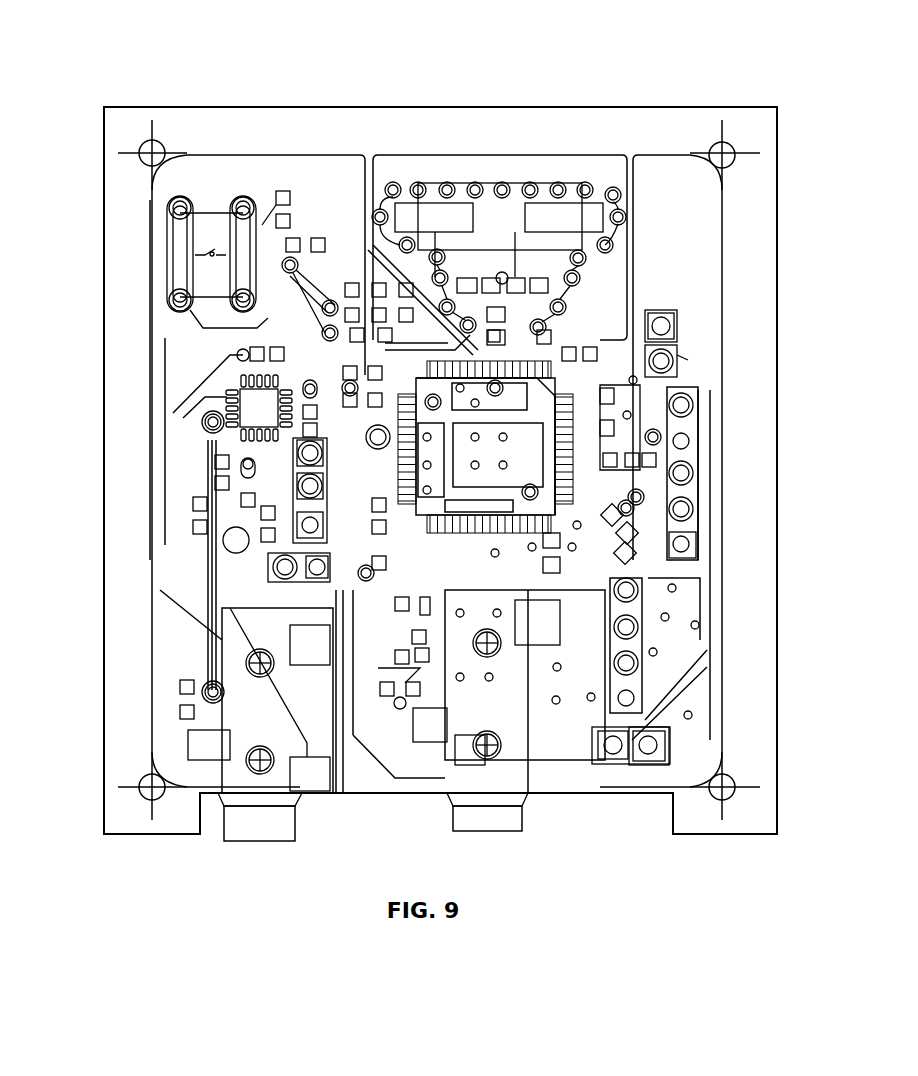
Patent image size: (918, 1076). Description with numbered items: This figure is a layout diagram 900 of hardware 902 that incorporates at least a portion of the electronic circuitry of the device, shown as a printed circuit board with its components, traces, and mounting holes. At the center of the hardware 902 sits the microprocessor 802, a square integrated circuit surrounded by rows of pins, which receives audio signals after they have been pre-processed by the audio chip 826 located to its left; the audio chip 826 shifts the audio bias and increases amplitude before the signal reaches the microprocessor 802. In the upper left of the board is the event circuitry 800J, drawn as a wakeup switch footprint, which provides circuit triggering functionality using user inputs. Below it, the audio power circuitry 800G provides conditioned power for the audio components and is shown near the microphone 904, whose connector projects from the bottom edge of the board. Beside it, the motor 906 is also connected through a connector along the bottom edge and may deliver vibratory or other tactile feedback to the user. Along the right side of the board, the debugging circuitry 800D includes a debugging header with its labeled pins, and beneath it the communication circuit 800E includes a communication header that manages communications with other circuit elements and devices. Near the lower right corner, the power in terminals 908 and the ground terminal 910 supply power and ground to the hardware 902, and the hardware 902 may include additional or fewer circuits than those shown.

The layout diagram 900 is at (205, 40).
The hardware 902 is at (165, 107).
The microprocessor 802 is at (675, 332).
The debugging circuitry 800D is at (762, 390).
The communication circuit 800E is at (725, 675).
The audio power circuitry 800G is at (232, 556).
The event circuitry 800J is at (157, 252).
The audio chip 826 is at (238, 390).
The microphone 904 is at (268, 843).
The motor 906 is at (492, 825).
The power in terminals 908 is at (615, 767).
The ground terminal 910 is at (652, 765).